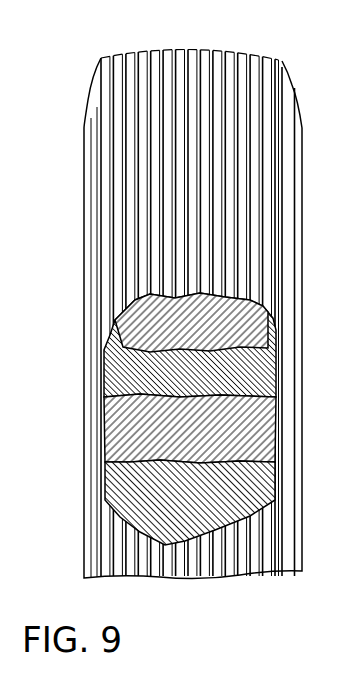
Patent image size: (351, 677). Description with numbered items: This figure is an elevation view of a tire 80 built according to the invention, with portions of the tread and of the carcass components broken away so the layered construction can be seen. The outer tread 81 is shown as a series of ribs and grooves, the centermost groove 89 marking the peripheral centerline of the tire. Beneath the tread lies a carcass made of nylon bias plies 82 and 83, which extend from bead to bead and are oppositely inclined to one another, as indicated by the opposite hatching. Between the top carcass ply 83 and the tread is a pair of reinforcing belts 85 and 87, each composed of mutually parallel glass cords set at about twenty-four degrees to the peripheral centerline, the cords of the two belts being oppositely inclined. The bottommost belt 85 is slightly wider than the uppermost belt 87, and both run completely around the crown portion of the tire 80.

The tire 80 is at (155, 292).
The tread 81 is at (231, 57).
The centermost groove 89 is at (191, 57).
The uppermost reinforcing belt 87 is at (152, 333).
The bottommost reinforcing belt 85 is at (138, 372).
The top carcass ply 83 is at (127, 432).
The nylon bias ply 82 is at (138, 511).